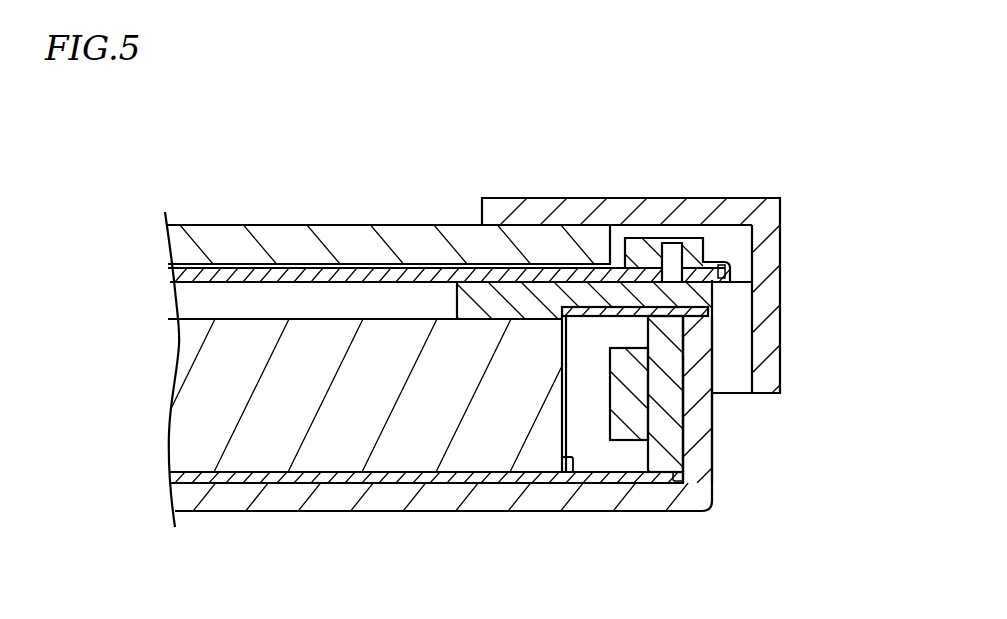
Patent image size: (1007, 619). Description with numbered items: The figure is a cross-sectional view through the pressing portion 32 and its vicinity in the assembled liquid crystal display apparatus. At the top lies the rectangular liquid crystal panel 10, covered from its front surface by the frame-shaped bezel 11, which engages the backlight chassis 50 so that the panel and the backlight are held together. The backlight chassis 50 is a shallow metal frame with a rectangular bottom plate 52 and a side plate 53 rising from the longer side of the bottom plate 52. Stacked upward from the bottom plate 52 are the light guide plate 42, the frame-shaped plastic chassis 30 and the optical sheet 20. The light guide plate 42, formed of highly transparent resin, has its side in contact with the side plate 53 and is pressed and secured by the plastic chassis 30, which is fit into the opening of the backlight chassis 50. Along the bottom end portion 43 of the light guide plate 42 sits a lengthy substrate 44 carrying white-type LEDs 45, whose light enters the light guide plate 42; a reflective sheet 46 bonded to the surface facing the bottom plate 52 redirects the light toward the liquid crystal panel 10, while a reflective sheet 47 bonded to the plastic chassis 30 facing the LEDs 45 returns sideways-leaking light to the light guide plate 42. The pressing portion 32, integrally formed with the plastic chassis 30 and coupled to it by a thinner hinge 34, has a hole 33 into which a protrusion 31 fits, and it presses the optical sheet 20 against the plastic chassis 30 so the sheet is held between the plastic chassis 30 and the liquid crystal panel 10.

The liquid crystal panel 10 is at (347, 237).
The bezel 11 is at (750, 198).
The optical sheet 20 is at (240, 280).
The plastic chassis 30 is at (485, 287).
The protrusion 31 is at (677, 247).
The pressing portion 32 is at (640, 243).
The hole 33 is at (656, 245).
The hinge 34 is at (728, 260).
The light guide plate 42 is at (403, 458).
The bottom end portion 43 is at (573, 458).
The lengthy substrate 44 is at (675, 414).
The LED 45 is at (630, 447).
The reflective sheet 46 is at (343, 480).
The reflective sheet 47 is at (708, 312).
The backlight chassis 50 is at (708, 498).
The bottom plate 52 is at (487, 502).
The side plate 53 is at (715, 450).